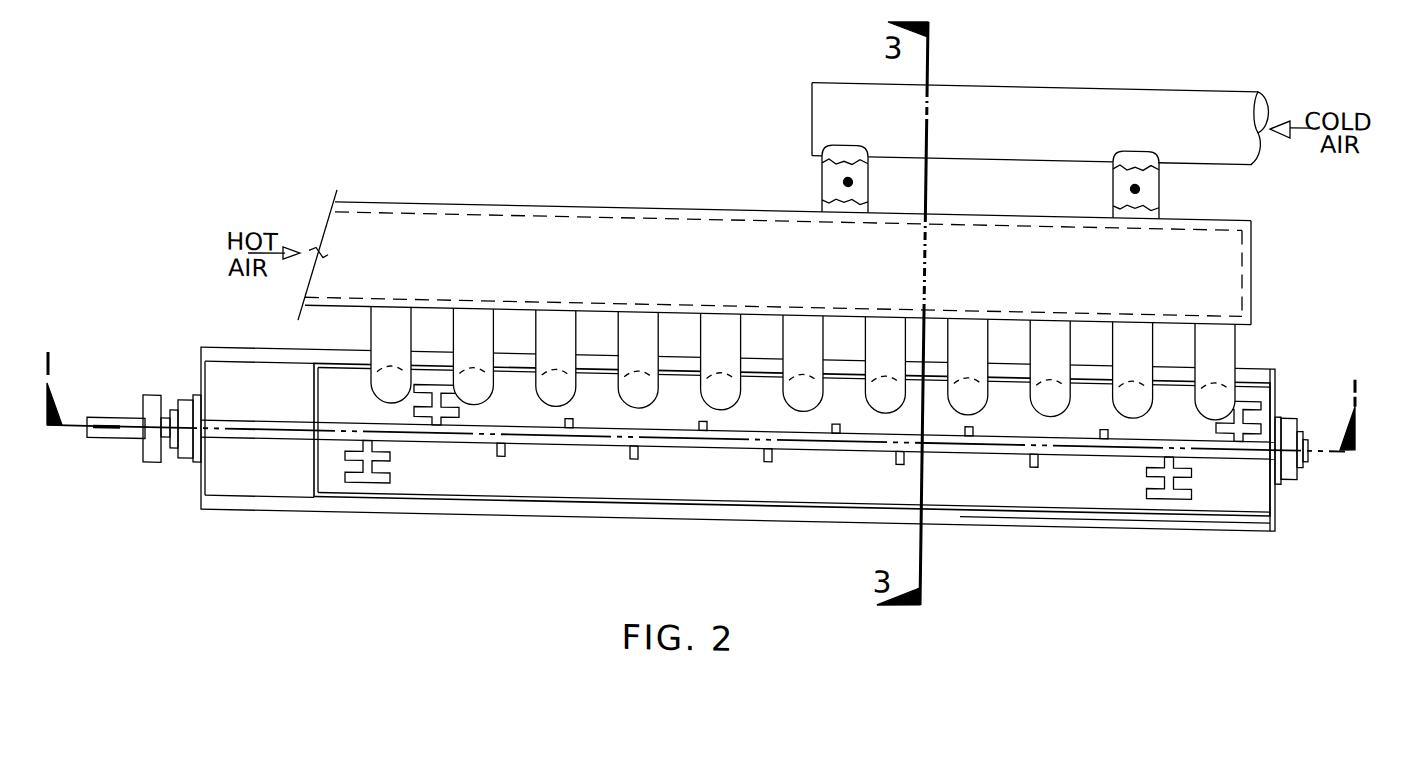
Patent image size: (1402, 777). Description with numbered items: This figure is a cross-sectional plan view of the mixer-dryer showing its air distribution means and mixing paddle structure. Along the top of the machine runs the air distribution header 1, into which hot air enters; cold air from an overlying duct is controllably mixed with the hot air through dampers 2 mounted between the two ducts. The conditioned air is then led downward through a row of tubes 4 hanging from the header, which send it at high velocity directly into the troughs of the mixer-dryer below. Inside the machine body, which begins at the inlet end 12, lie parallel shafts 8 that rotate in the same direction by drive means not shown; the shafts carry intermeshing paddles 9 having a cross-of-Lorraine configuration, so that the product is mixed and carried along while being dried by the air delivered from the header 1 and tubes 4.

The air distribution header 1 is at (1252, 238).
The dampers 2 is at (828, 161).
The tubes 4 is at (788, 384).
The parallel shafts 8 is at (600, 435).
The intermeshing paddles 9 is at (1192, 466).
The inlet end of the mixer-dryer 12 is at (218, 377).